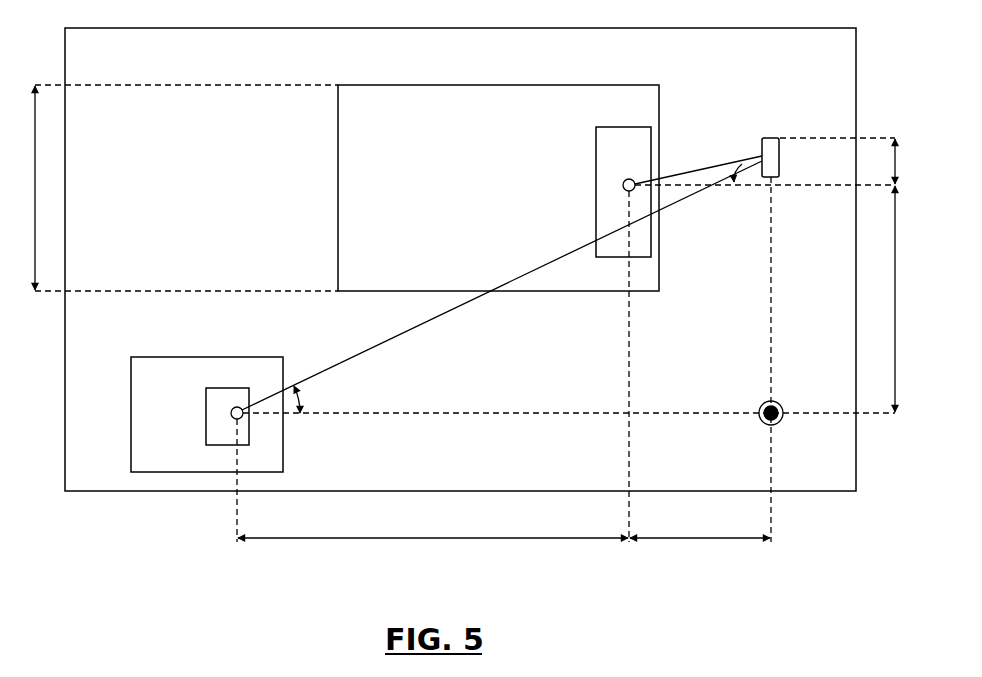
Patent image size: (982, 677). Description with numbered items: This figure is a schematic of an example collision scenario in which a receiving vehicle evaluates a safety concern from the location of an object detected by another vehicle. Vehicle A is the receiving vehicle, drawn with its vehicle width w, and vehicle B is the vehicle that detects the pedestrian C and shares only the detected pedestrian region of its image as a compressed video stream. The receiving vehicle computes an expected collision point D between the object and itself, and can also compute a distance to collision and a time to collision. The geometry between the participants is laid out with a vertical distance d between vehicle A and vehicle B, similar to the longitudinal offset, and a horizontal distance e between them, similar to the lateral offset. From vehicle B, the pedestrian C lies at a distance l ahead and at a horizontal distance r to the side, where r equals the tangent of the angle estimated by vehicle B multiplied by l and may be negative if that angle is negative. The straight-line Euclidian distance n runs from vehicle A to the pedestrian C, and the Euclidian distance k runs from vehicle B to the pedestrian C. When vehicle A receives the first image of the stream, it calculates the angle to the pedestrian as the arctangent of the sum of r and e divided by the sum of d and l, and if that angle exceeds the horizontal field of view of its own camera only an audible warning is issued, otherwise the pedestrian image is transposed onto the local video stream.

The vehicle A is at (207, 392).
The vehicle B is at (584, 192).
The pedestrian C is at (773, 132).
The expected collision point D is at (762, 432).
The vehicle width w is at (172, 188).
The Euclidian distance between vehicle B and pedestrian k is at (698, 163).
The Euclidian distance between vehicle A and pedestrian n is at (502, 285).
The vertical distance between vehicle A and B d is at (433, 366).
The distance between vehicle B and pedestrian l is at (700, 359).
The horizontal distance between pedestrian and vehicle B r is at (777, 161).
The horizontal distance between vehicle A and B e is at (581, 299).